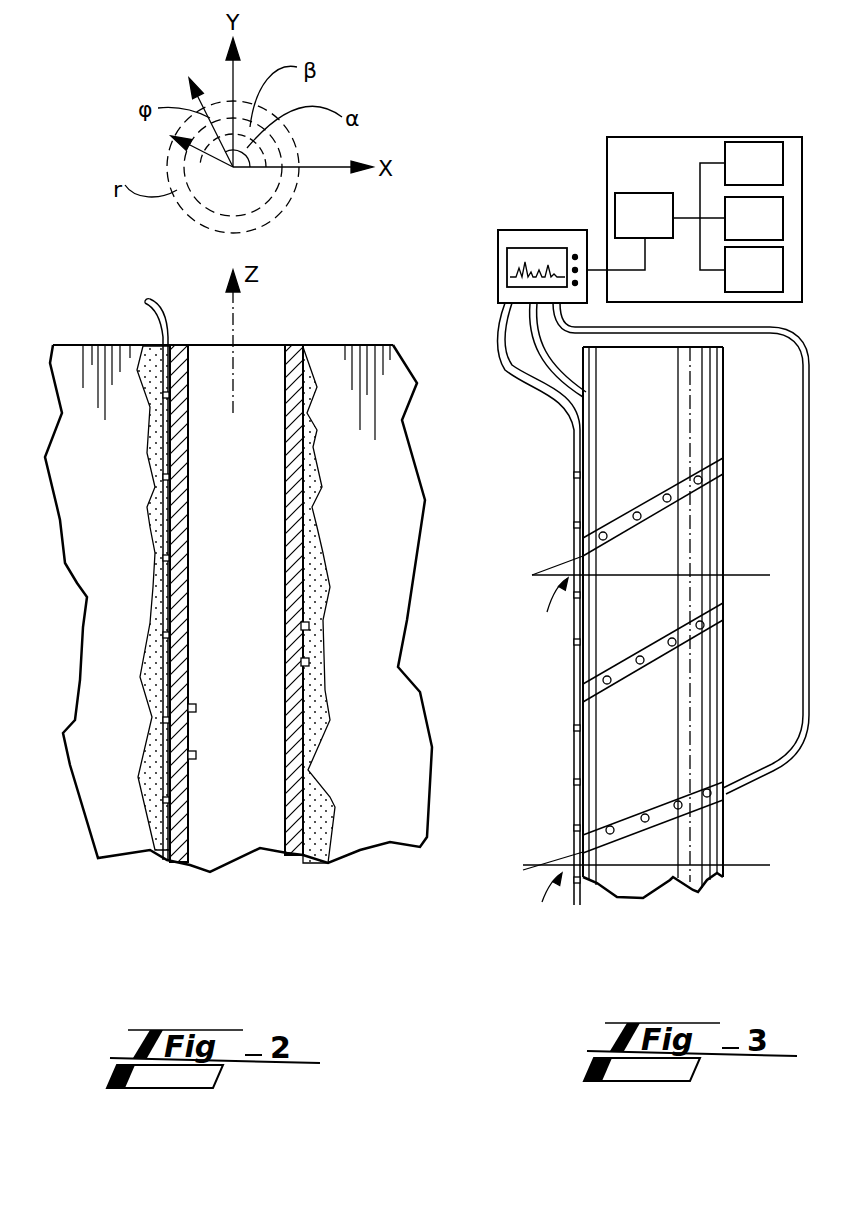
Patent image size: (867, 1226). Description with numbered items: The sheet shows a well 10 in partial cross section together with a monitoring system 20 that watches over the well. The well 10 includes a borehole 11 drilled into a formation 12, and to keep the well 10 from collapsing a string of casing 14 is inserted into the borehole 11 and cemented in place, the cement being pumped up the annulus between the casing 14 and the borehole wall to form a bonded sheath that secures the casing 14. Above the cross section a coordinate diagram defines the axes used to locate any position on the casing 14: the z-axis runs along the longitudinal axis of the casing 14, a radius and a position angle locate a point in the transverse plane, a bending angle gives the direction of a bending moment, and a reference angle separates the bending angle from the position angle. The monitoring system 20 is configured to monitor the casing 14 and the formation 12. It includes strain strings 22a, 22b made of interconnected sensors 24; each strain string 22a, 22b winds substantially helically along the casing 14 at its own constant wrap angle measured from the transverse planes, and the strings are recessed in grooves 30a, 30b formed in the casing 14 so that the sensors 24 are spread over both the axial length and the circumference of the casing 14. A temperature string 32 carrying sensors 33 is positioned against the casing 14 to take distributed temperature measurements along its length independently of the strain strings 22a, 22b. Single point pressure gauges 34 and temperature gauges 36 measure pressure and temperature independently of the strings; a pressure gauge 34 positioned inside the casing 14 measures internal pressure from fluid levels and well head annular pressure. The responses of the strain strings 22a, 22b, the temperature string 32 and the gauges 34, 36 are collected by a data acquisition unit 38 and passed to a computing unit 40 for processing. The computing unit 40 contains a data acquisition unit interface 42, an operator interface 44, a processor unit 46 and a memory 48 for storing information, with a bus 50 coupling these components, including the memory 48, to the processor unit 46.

In FIG. 2, the well 10 is at (273, 307).
In FIG. 2, the borehole 11 is at (323, 552).
In FIG. 2, the formation 12 is at (127, 745).
In FIG. 2, the casing 14 is at (250, 502).
In FIG. 2, the temperature string 32 is at (157, 307).
In FIG. 3, the temperature string 32 is at (500, 367).
In FIG. 2, the sensors 33 is at (165, 397).
In FIG. 3, the sensors 33 is at (577, 475).
In FIG. 2, the pressure gauge 34 is at (198, 710).
In FIG. 2, the temperature gauge 36 is at (197, 755).
In FIG. 3, the monitoring system 20 is at (517, 150).
In FIG. 3, the strain string 22a is at (650, 643).
In FIG. 3, the strain string 22b is at (632, 833).
In FIG. 3, the sensors 24 is at (720, 518).
In FIG. 3, the groove 30a is at (722, 518).
In FIG. 3, the groove 30b is at (693, 817).
In FIG. 3, the data acquisition unit 38 is at (540, 230).
In FIG. 3, the computing unit 40 is at (757, 127).
In FIG. 3, the data acquisition unit interface 42 is at (660, 229).
In FIG. 3, the operator interface 44 is at (770, 177).
In FIG. 3, the processor unit 46 is at (770, 232).
In FIG. 3, the memory 48 is at (770, 283).
In FIG. 3, the bus 50 is at (698, 243).